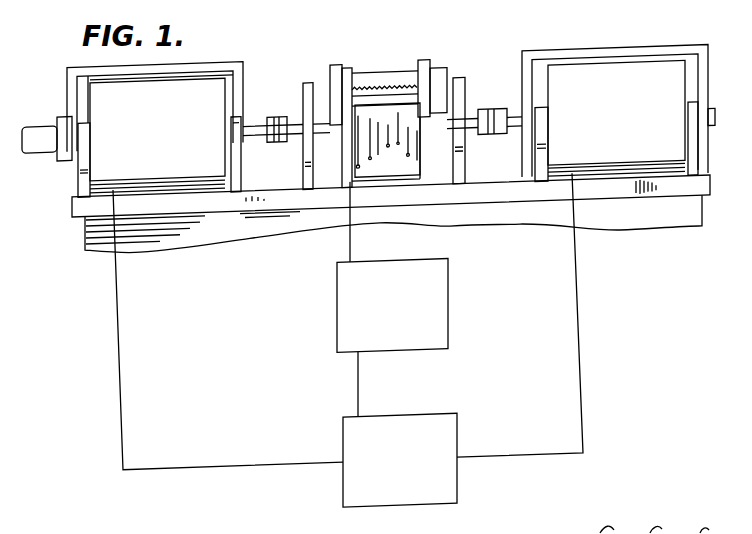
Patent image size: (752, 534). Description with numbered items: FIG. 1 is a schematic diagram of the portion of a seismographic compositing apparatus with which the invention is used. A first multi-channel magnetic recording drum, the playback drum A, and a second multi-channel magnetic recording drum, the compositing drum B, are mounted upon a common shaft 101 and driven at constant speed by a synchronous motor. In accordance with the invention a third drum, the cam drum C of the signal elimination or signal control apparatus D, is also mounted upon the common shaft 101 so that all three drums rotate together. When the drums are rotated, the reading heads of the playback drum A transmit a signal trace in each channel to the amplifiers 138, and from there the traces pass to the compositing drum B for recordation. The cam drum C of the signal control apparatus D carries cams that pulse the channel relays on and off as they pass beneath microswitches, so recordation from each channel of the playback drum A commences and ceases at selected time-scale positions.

The common shaft 101 is at (259, 119).
The amplifiers 138 is at (404, 494).
The playback drum A is at (619, 132).
The compositing drum B is at (161, 141).
The cam drum C is at (406, 66).
The signal control apparatus D is at (398, 316).